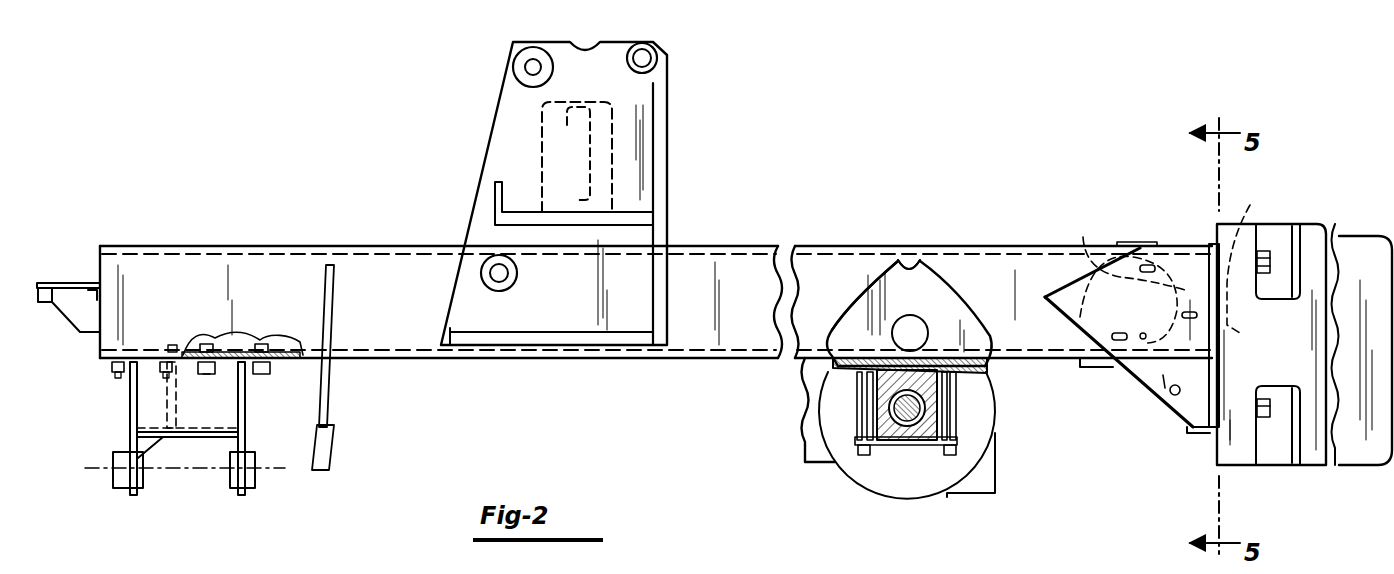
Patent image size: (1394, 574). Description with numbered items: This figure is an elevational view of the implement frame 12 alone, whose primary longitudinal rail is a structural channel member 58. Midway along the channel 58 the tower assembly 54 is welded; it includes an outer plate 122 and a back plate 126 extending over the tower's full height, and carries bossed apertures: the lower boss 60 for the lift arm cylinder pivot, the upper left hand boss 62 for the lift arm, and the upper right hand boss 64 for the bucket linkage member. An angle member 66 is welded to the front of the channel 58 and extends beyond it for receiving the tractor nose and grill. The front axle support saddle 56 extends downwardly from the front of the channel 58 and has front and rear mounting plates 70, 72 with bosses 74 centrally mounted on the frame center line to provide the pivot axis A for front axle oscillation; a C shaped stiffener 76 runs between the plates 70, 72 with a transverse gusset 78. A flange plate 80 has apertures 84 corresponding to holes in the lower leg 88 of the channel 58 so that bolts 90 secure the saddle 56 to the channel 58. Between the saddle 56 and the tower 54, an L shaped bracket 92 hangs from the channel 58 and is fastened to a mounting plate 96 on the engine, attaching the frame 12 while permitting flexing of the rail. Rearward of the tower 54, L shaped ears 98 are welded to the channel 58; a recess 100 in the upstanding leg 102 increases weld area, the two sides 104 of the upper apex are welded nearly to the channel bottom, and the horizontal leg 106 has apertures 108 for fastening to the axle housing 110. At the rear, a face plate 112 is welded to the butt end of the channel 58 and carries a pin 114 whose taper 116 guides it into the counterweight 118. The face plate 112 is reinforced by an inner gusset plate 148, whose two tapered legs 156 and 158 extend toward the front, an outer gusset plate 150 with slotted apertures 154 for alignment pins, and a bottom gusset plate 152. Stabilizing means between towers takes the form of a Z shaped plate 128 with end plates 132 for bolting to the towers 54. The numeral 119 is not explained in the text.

The implement frame 12 is at (400, 213).
The tower assembly 54 is at (585, 175).
The front axle support saddle 56 is at (211, 410).
The structural channel member 58 is at (822, 250).
The lower boss 60 is at (519, 277).
The upper left hand boss 62 is at (512, 62).
The upper right hand boss 64 is at (658, 53).
The angle member 66 is at (72, 283).
The front mounting plate 70 is at (128, 378).
The rear mounting plate 72 is at (247, 422).
The bosses 74 is at (118, 482).
The C shaped stiffener 76 is at (205, 440).
The gusset 78 is at (177, 410).
The flange plate 80 is at (104, 362).
The apertures 84 is at (262, 344).
The lower leg of frame channel 88 is at (289, 352).
The bolts 90 is at (264, 374).
The L shaped bracket 92 is at (333, 390).
The mounting plate 96 is at (334, 454).
The L shaped ears 98 is at (923, 285).
The recess 100 is at (920, 328).
The upstanding leg 102 is at (864, 303).
The sides forming upper apex 104 is at (910, 262).
The horizontal leg 106 is at (838, 366).
The apertures 108 is at (975, 376).
The axle housing 110 is at (985, 424).
The face plate 112 is at (1212, 243).
The pin 114 is at (1276, 332).
The taper 116 is at (1259, 279).
The counterweight 118 is at (1372, 212).
The slot bolts 119 is at (1270, 250).
The outer plate 122 is at (572, 72).
The back plate 126 is at (670, 152).
The Z shaped plate 128 is at (582, 156).
The end plates 132 is at (542, 120).
The inner gusset plate 148 is at (1078, 318).
The outer gusset plate 150 is at (1116, 341).
The bottom gusset plate 152 is at (1162, 456).
The slotted apertures 154 is at (1150, 265).
The leg of inner gusset plate 156 is at (1122, 255).
The leg of inner gusset plate 158 is at (1140, 374).
The pivot axis A is at (105, 478).